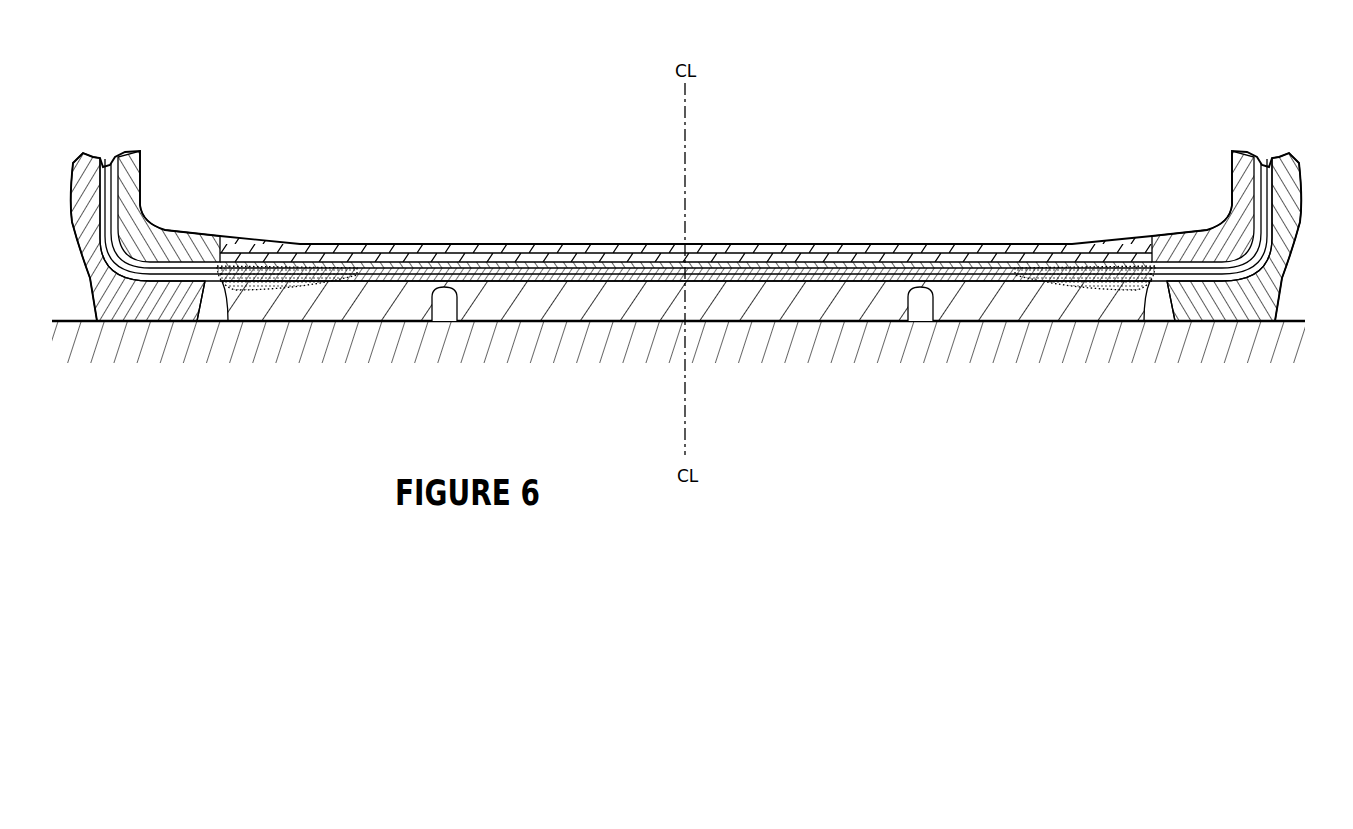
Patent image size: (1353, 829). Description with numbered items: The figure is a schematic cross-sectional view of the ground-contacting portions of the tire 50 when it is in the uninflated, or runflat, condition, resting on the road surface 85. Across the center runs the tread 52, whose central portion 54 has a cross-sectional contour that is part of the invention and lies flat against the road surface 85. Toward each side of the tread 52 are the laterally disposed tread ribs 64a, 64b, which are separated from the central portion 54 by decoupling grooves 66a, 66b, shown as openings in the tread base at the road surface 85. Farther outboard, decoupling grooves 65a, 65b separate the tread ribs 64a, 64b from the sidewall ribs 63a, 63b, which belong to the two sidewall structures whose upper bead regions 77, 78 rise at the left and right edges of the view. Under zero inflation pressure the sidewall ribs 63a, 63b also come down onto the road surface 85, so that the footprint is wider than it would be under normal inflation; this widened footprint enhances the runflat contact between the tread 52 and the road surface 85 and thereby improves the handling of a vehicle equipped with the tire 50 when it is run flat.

The tire 50 is at (696, 258).
The tread 52 is at (600, 305).
The central portion 54 is at (793, 305).
The sidewall rib 63a is at (150, 313).
The sidewall rib 63b is at (1218, 312).
The tread rib 64a is at (298, 312).
The tread rib 64b is at (1062, 308).
The decoupling groove 65a is at (210, 312).
The decoupling groove 65b is at (1153, 308).
The decoupling groove 66a is at (447, 312).
The decoupling groove 66b is at (925, 308).
The bead top 77 is at (72, 217).
The bead top 78 is at (1300, 187).
The road surface 85 is at (633, 332).